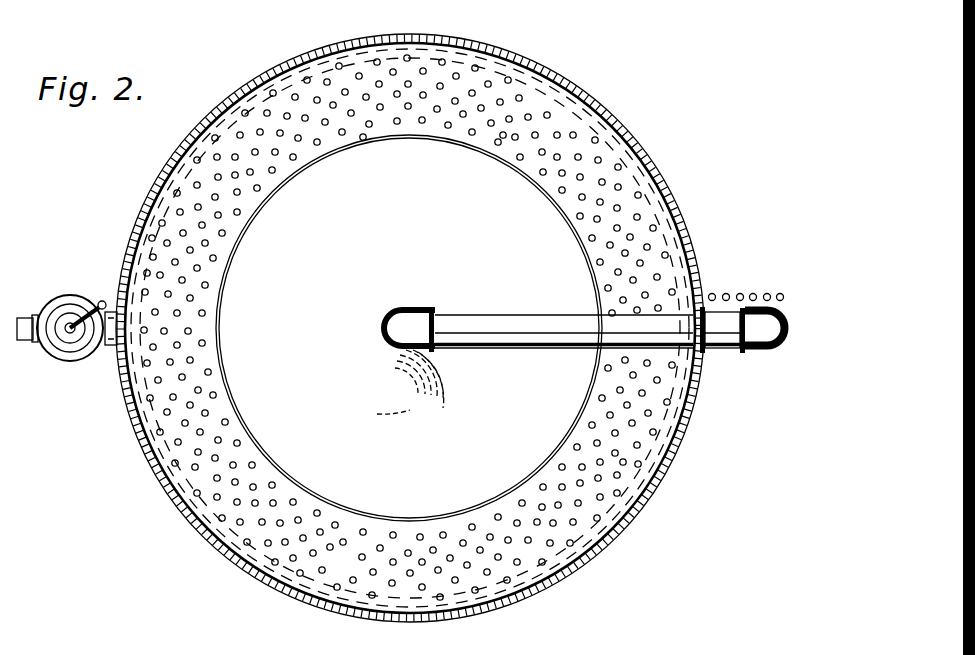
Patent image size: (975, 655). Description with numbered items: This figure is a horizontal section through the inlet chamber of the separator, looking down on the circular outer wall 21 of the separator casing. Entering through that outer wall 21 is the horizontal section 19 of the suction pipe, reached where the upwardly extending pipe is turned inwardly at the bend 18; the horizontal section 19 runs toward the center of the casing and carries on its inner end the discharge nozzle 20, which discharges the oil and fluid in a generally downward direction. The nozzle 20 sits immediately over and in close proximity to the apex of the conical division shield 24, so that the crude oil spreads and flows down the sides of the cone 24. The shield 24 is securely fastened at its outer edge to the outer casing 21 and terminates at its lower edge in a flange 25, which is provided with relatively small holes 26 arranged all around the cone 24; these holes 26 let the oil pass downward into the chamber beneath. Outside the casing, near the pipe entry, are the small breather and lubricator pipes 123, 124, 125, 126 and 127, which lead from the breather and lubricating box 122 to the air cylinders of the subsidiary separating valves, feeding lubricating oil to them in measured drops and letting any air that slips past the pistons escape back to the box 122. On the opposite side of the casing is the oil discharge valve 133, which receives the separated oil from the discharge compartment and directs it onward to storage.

The inwardly turned portion of suction pipe 18 is at (757, 340).
The horizontal section of suction pipe 19 is at (517, 315).
The discharge nozzle 20 is at (413, 322).
The outer wall of separator 21 is at (142, 197).
The conical division shield 24 is at (351, 382).
The flange 25 is at (605, 168).
The holes 26 is at (557, 135).
The breather and lubricating box 122 is at (784, 301).
The breather and lubricator pipe 123 is at (768, 291).
The breather and lubricator pipe 124 is at (753, 292).
The breather and lubricator pipe 125 is at (740, 292).
The breather and lubricator pipe 126 is at (726, 292).
The breather and lubricator pipe 127 is at (712, 292).
The oil discharge valve 133 is at (78, 274).